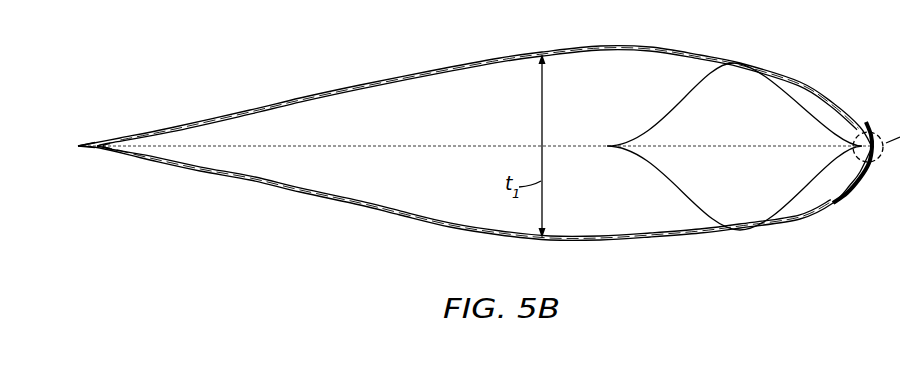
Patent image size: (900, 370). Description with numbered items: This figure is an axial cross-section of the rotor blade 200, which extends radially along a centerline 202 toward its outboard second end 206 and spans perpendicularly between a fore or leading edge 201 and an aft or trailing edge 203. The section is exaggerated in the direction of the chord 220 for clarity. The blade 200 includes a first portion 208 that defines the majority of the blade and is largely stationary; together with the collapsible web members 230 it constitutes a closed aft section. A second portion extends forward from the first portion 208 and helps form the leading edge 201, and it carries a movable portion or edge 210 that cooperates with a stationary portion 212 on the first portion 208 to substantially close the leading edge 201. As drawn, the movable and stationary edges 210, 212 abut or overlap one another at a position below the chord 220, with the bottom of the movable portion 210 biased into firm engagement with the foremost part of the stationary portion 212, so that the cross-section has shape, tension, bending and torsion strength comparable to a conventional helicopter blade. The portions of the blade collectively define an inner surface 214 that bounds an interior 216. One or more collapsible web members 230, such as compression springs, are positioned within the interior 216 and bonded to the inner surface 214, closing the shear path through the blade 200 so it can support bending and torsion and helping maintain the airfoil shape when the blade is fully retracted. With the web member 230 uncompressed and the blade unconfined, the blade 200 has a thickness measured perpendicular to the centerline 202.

The rotor blade 200 is at (227, 95).
The leading edge 201 is at (829, 78).
The centerline 202 is at (547, 148).
The trailing edge 203 is at (104, 132).
The outboard second end 206 is at (862, 183).
The first portion 208 is at (570, 50).
The movable portion or edge 210 is at (838, 205).
The stationary portion 212 is at (825, 210).
The inner surface 214 is at (462, 78).
The interior 216 is at (367, 116).
The chord 220 is at (190, 149).
The collapsible web member 230 is at (664, 120).